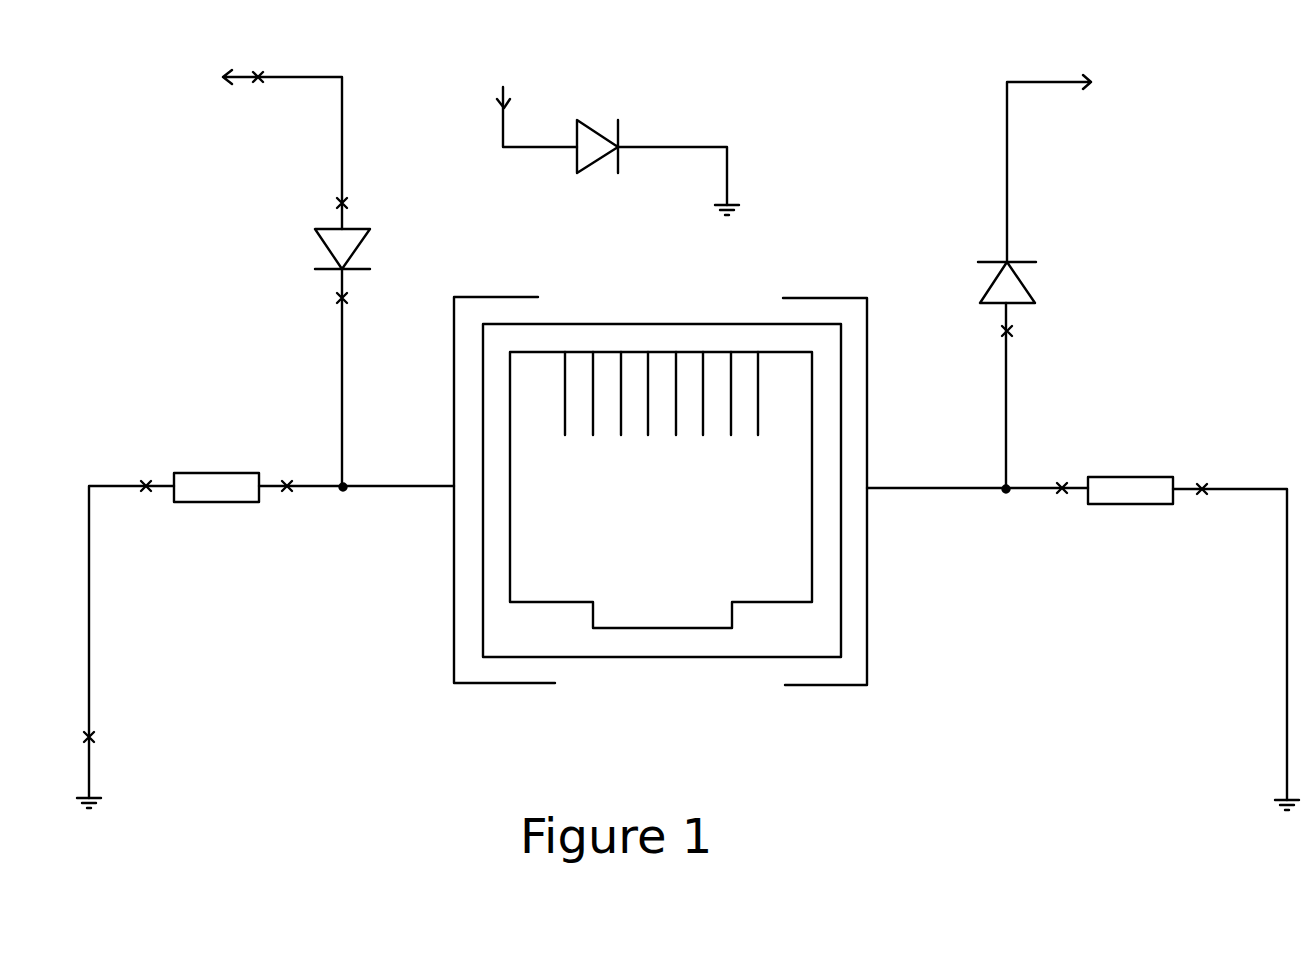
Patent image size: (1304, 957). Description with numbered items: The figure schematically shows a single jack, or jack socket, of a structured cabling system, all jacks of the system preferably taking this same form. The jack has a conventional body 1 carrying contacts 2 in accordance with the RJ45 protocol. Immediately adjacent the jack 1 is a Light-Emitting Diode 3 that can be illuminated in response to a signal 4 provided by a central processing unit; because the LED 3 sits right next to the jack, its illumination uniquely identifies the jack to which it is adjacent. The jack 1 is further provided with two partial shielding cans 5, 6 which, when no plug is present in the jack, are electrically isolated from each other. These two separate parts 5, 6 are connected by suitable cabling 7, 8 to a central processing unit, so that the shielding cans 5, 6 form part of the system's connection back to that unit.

The body 1 is at (640, 645).
The contacts 2 is at (565, 422).
The Light-Emitting Diode 3 is at (597, 176).
The signal 4 is at (492, 97).
The partial shielding can 5 is at (452, 583).
The partial shielding can 6 is at (868, 577).
The cabling 7 is at (342, 370).
The cabling 8 is at (1006, 397).